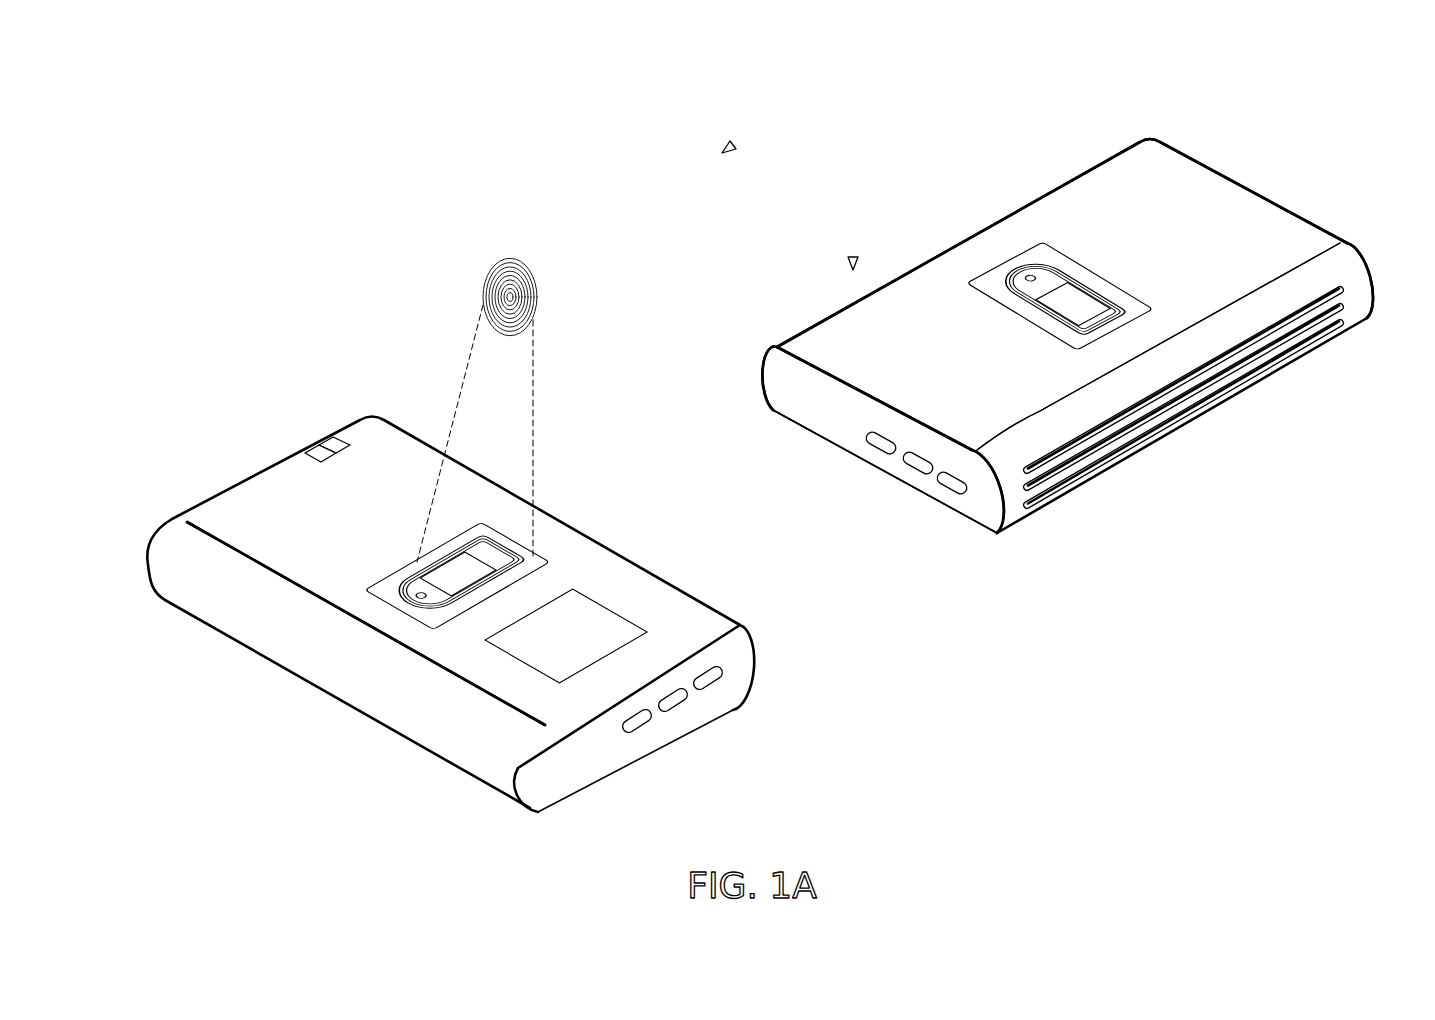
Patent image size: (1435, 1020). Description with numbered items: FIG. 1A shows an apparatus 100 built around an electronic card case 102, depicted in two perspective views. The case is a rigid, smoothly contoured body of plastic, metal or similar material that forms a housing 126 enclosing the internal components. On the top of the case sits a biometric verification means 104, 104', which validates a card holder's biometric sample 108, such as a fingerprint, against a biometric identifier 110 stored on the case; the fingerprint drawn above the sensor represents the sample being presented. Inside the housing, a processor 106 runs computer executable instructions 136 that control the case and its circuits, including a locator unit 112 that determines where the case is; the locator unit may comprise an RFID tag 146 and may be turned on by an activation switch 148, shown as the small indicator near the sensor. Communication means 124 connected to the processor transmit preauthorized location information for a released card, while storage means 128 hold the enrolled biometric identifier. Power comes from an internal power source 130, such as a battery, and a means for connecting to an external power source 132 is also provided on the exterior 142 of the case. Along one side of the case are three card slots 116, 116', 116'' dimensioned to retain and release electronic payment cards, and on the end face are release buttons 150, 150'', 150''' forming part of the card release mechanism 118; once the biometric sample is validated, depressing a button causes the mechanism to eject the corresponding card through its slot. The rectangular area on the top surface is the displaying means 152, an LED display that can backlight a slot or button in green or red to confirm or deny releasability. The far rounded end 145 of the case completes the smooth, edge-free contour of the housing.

The apparatus 100 is at (733, 145).
The electronic card case 102 is at (852, 258).
The biometric verification means 104 is at (1050, 245).
The fingerprint sensor 104' is at (509, 547).
The processor 106 is at (267, 470).
The biometric sample 108 is at (480, 302).
The biometric identifier 110 is at (1100, 178).
The locator unit 112 is at (317, 438).
The card slot 116 is at (1183, 392).
The card slot 116' is at (1183, 425).
The card slot 116'' is at (1183, 455).
The card release mechanism 118 is at (980, 508).
The communication means 124 is at (270, 642).
The housing 126 is at (207, 500).
The storage means 128 is at (1233, 182).
The internal power source 130 is at (800, 415).
The means for connecting to an external power source 132 is at (763, 373).
The computer executable instructions 136 is at (518, 790).
The exterior 142 is at (387, 635).
The far end 145 is at (1371, 290).
The RFID tag 146 is at (830, 318).
The activation switch 148 is at (330, 432).
The release button 150 is at (853, 481).
The release button 150'' is at (794, 636).
The button 150''' is at (771, 710).
The displaying means 152 is at (597, 622).